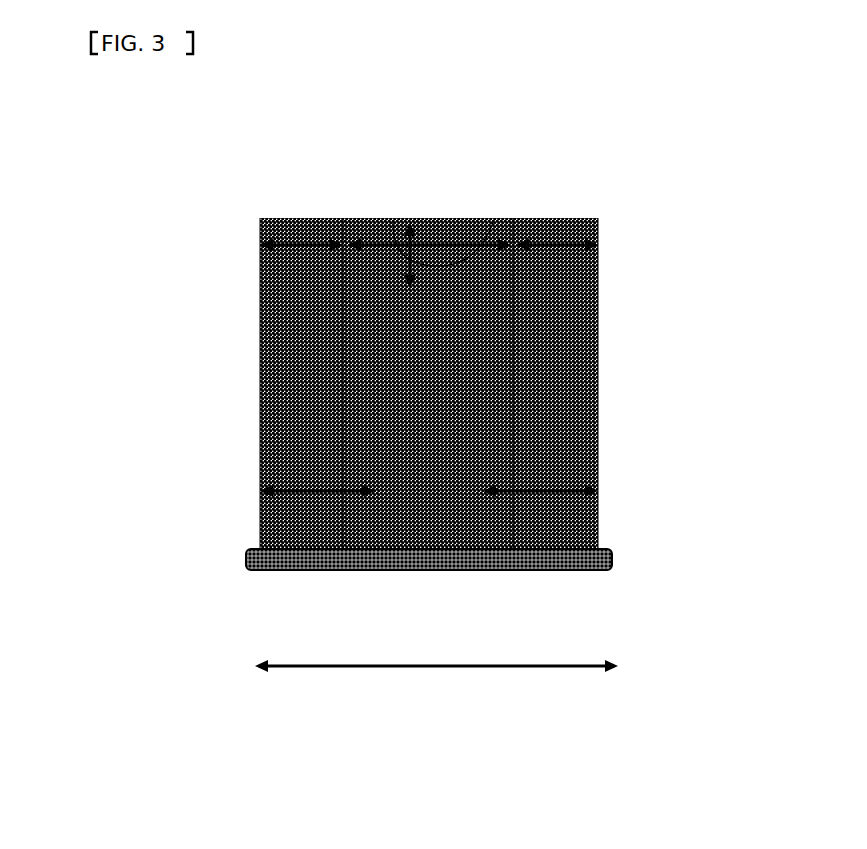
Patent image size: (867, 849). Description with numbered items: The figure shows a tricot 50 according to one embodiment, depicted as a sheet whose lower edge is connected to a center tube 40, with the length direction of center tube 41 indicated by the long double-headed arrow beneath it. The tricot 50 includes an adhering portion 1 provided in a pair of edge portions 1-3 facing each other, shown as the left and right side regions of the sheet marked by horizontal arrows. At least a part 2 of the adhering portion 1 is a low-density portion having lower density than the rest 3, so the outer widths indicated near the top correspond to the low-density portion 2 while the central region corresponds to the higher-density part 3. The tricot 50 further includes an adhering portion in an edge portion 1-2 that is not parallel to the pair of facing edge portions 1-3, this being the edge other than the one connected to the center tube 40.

The tricot 50 is at (252, 119).
The adhering portion 1 is at (385, 214).
The low-density portion of adhering portion 2 is at (294, 230).
The high-density portion of adhering portion 3 is at (438, 222).
The edge portion not parallel to pair of facing edge portions 1-2 is at (483, 212).
The adhering portion of pair of edge portions facing each other 1-3 is at (285, 483).
The center tube 40 is at (604, 552).
The length direction of center tube 41 is at (480, 658).